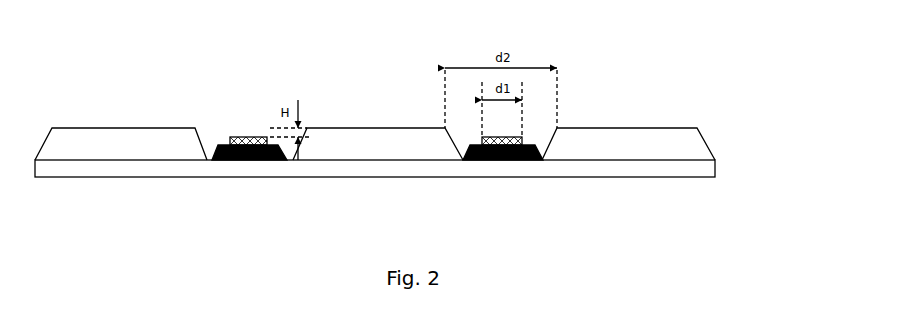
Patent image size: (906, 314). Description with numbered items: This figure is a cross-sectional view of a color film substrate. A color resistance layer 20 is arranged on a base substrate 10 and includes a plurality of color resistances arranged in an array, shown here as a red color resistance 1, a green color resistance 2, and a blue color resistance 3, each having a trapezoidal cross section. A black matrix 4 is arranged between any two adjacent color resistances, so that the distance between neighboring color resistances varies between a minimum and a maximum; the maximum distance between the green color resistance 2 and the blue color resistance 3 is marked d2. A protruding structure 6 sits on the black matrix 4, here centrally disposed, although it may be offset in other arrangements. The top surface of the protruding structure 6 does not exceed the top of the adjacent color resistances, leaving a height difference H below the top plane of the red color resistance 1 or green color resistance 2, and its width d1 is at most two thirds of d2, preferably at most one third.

The red color resistance 1 is at (143, 143).
The green color resistance 2 is at (368, 143).
The blue color resistance 3 is at (623, 142).
The black matrix 4 is at (255, 158).
The protruding structure 6 is at (235, 135).
The base substrate 10 is at (688, 167).
The color resistance layer 20 is at (722, 143).